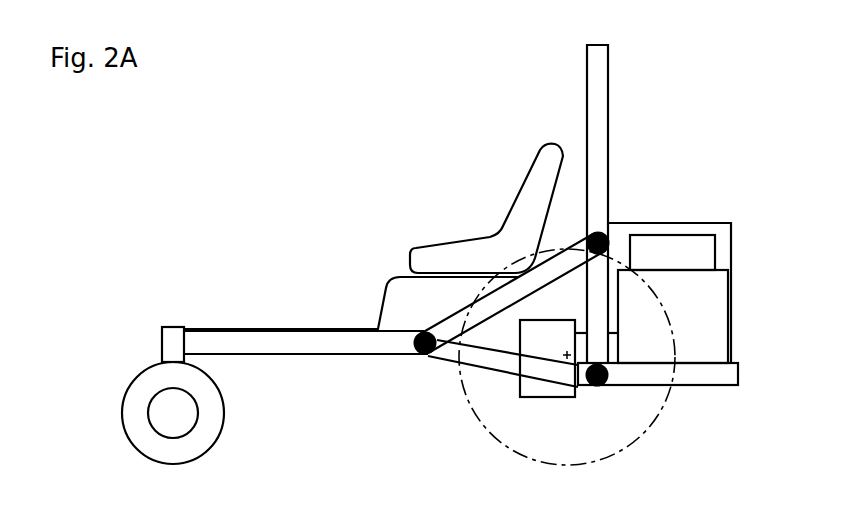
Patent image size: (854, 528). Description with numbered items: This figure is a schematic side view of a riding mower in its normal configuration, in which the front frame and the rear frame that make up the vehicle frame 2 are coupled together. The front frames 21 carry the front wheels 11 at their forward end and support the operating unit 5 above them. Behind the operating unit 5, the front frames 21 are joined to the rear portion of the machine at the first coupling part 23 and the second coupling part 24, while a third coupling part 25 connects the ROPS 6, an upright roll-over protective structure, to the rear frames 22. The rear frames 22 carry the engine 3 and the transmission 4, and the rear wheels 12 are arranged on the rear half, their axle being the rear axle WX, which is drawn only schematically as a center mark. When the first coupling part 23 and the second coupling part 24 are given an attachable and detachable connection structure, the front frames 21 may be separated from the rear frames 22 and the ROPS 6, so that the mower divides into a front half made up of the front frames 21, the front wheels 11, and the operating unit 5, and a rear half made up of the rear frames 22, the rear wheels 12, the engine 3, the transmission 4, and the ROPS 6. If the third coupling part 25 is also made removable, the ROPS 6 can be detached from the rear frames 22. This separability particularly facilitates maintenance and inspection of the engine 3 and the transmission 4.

The vehicle frame 2 is at (152, 347).
The front wheels 11 is at (145, 448).
The front frames 21 is at (300, 344).
The first coupling part 23 is at (423, 356).
The operating unit 5 is at (436, 239).
The second coupling part 24 is at (596, 232).
The engine 3 is at (693, 243).
The ROPS 6 is at (604, 85).
The transmission 4 is at (545, 392).
The third coupling part 25 is at (598, 386).
The rear frames 22 is at (712, 380).
The rear wheels 12 is at (627, 447).
The rear axle WX is at (563, 349).